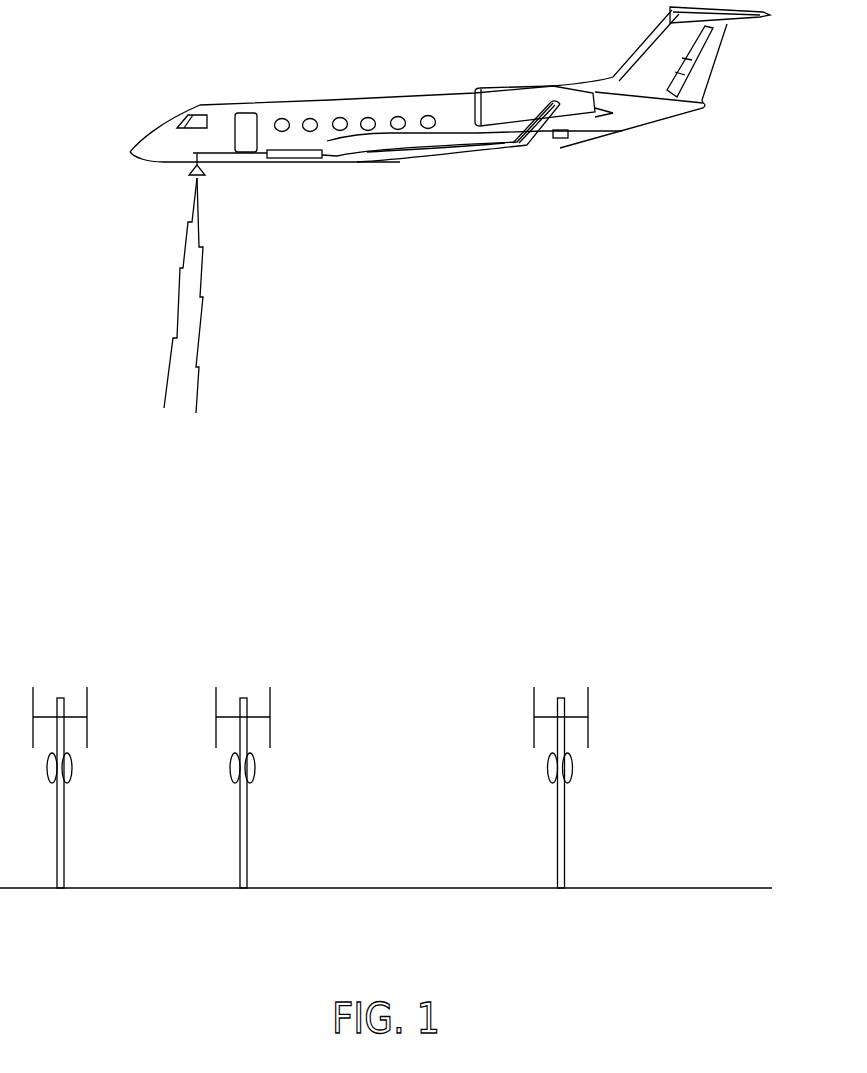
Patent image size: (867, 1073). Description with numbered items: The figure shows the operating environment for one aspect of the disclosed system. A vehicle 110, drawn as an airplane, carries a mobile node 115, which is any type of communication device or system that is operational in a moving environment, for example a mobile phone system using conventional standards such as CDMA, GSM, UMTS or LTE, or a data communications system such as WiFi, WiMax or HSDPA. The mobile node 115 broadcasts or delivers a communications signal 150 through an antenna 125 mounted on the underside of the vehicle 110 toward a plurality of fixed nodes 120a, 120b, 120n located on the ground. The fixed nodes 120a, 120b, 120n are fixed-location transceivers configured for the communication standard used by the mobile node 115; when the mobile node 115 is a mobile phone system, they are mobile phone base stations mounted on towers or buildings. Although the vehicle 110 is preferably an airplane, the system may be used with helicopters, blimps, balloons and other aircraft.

The vehicle 110 is at (413, 95).
The mobile node 115 is at (285, 158).
The antenna 125 is at (186, 171).
The communications signal 150 is at (178, 290).
The fixed node 120a is at (87, 698).
The fixed node 120b is at (270, 698).
The fixed node 120n is at (588, 693).